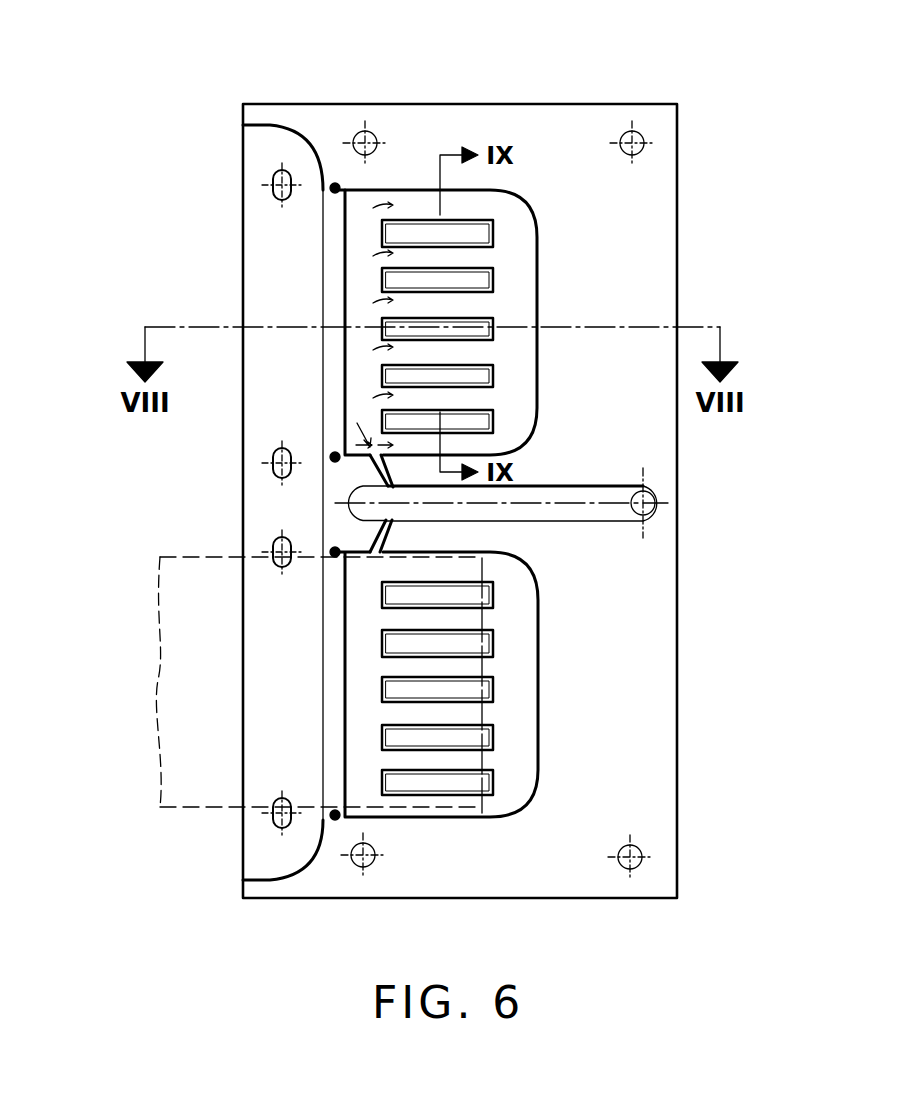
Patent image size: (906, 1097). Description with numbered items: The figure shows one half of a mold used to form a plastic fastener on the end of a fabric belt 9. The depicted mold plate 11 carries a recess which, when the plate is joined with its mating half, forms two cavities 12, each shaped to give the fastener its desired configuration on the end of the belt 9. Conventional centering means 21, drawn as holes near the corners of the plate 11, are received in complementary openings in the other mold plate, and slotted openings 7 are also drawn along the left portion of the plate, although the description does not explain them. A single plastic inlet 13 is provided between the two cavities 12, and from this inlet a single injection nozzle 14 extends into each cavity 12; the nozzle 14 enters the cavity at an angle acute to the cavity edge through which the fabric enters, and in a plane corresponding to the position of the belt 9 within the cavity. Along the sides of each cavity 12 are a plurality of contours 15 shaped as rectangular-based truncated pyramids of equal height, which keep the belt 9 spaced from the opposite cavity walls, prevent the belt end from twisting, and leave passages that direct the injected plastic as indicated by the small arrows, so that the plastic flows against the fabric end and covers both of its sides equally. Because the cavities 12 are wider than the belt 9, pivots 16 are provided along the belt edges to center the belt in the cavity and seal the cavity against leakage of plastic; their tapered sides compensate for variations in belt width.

The slotted mounting holes 7 is at (272, 455).
The belt 9 is at (190, 695).
The mold plate 11 is at (607, 663).
The cavities 12 is at (512, 400).
The plastic inlet 13 is at (580, 512).
The injection nozzle 14 is at (372, 535).
The contours 15 is at (490, 317).
The pivots 16 is at (335, 187).
The centering means 21 is at (365, 131).